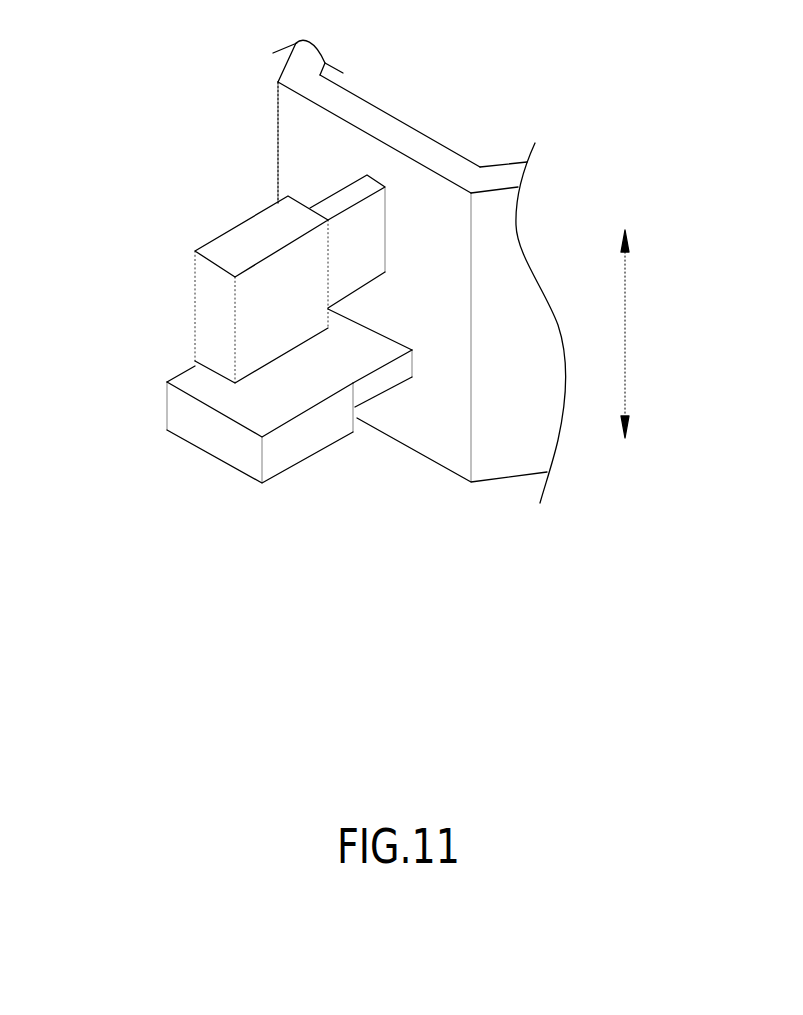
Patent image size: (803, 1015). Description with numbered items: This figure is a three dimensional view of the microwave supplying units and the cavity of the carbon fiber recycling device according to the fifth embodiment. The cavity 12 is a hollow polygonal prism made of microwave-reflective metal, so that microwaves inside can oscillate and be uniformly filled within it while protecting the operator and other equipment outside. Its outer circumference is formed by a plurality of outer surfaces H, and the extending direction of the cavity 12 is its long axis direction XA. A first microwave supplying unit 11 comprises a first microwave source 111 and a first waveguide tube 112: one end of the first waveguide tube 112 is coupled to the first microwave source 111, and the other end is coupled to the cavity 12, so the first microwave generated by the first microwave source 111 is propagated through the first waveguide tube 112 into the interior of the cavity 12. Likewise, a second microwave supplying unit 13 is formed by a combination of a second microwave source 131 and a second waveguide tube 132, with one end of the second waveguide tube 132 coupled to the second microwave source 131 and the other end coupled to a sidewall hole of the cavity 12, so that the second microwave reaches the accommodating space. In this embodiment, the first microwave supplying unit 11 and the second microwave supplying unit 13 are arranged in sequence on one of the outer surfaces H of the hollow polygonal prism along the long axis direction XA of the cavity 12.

The first microwave supplying unit 11 is at (221, 205).
The first microwave source 111 is at (255, 238).
The first waveguide tube 112 is at (340, 198).
The cavity 12 is at (393, 127).
The second microwave supplying unit 13 is at (277, 485).
The second microwave source 131 is at (320, 432).
The second waveguide tube 132 is at (385, 371).
The outer surfaces H is at (408, 177).
The long axis direction XA is at (651, 334).